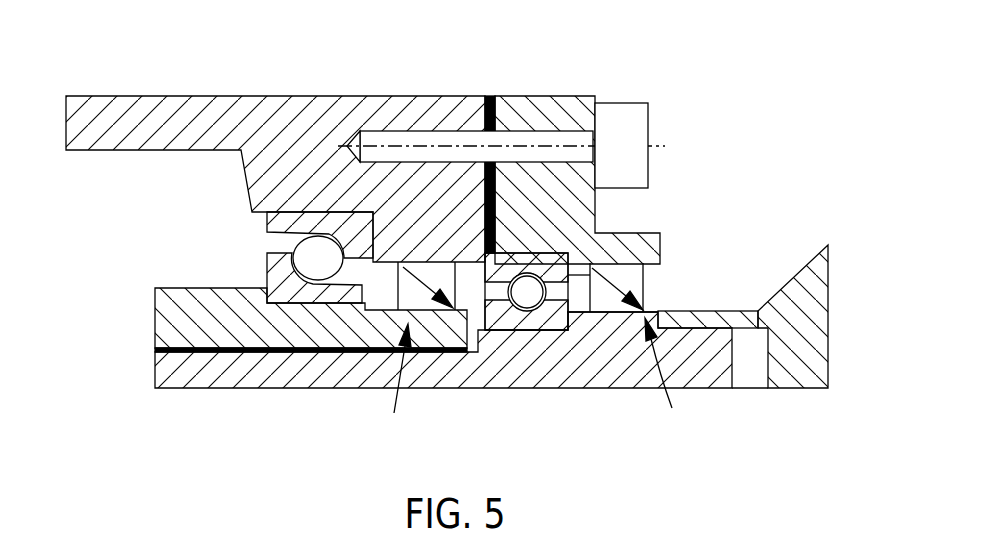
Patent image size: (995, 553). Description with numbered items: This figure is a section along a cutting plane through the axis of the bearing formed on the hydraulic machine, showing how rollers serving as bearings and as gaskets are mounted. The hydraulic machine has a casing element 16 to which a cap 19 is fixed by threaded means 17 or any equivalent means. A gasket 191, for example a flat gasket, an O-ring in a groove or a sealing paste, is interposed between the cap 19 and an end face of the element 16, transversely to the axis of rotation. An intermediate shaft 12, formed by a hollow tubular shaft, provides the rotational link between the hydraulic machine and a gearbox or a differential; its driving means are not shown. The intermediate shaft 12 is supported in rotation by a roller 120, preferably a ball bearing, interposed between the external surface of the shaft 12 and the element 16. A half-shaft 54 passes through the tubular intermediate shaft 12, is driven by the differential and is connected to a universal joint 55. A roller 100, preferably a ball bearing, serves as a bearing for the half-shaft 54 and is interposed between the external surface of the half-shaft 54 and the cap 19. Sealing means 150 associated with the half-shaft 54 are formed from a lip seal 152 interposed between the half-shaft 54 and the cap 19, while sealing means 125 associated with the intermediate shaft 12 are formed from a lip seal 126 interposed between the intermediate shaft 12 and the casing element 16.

The intermediate shaft 12 is at (203, 302).
The element of the casing 16 is at (185, 118).
The threaded means 17 is at (623, 160).
The cap 19 is at (523, 96).
The gasket 191 is at (490, 95).
The roller 100 is at (550, 258).
The roller 120 is at (320, 297).
The sealing means 125 is at (392, 383).
The lip seal 126 is at (425, 303).
The sealing means 150 is at (671, 376).
The lip seal 152 is at (603, 305).
The half-shaft 54 is at (244, 372).
The universal joint 55 is at (790, 372).